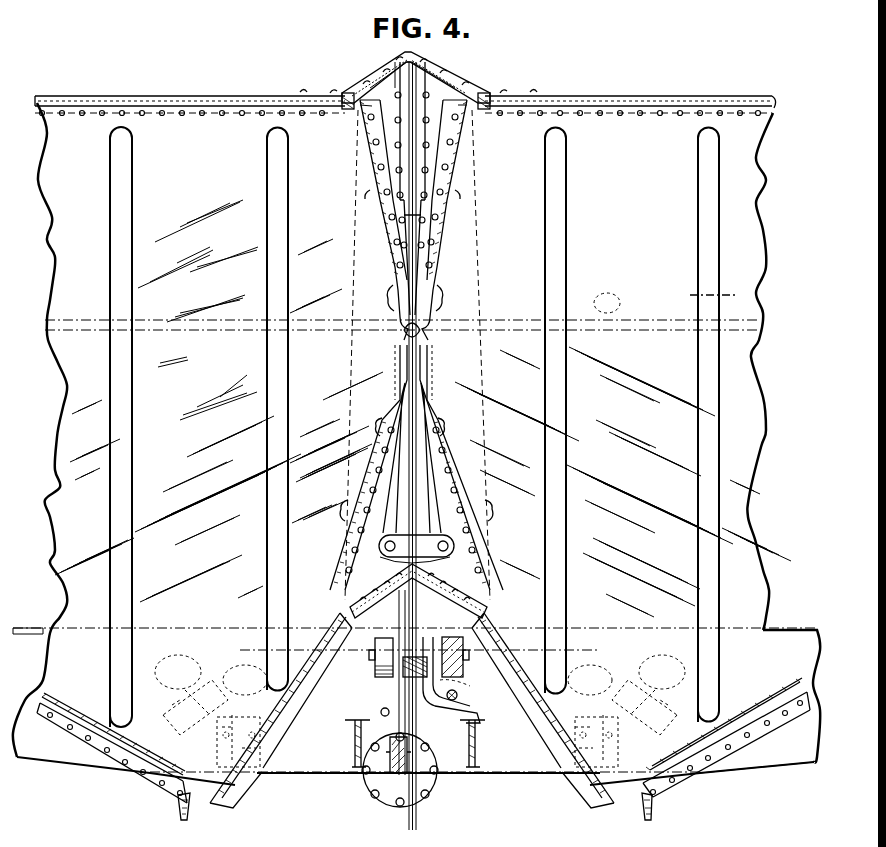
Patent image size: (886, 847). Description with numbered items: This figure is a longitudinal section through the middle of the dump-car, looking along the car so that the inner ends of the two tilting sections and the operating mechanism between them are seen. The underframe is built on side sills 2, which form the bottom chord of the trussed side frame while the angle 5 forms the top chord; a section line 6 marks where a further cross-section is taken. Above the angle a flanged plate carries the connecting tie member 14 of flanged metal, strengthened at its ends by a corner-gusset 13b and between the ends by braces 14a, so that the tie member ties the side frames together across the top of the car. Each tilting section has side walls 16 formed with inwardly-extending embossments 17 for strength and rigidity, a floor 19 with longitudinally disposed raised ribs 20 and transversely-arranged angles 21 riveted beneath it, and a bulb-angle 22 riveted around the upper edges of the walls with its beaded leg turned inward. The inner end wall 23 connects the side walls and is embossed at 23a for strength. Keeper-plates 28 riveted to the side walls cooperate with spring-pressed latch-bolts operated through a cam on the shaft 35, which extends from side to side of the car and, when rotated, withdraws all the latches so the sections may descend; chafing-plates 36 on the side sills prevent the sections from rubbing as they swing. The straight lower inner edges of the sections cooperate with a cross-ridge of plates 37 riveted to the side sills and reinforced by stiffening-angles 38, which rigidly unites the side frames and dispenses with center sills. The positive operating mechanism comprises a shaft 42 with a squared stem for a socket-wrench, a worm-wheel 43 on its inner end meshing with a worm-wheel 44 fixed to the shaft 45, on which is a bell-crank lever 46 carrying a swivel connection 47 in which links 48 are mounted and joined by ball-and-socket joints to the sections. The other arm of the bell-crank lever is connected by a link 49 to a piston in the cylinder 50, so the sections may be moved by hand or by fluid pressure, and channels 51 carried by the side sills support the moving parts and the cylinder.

The side sill 2 is at (757, 751).
The angle 5 is at (597, 327).
The section line 6- 6 is at (708, 295).
The corner-gusset 13b is at (396, 92).
The connecting tie member 14 is at (378, 70).
The brace 14a is at (462, 80).
The side wall 16 is at (416, 444).
The embossment 17 is at (122, 226).
The floor 19 is at (138, 757).
The raised rib 20 is at (72, 692).
The transversely-arranged angle 21 is at (180, 806).
The bulb-angle 22 is at (737, 96).
The inner end wall 23 is at (392, 258).
The embossment of inner end wall 23a is at (375, 196).
The keeper-plate 28 is at (417, 716).
The shaft 35 is at (389, 713).
The chafing-plate 36 is at (420, 695).
The cross-ridge plate 37 is at (313, 651).
The stiffening-angle 38 is at (280, 748).
The shaft 42 is at (452, 701).
The worm-wheel 43 is at (480, 708).
The worm-wheel 44 is at (463, 672).
The shaft 45 is at (377, 668).
The bell-crank lever 46 is at (408, 656).
The swivel connection 47 is at (455, 562).
The link 48 is at (393, 488).
The link 49 is at (392, 770).
The cylinder 50 is at (430, 796).
The channel 51 is at (353, 758).